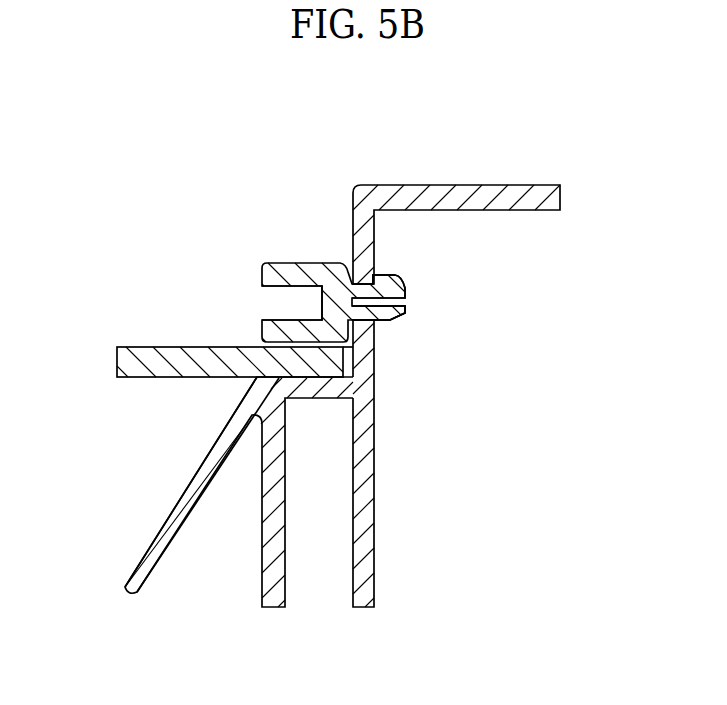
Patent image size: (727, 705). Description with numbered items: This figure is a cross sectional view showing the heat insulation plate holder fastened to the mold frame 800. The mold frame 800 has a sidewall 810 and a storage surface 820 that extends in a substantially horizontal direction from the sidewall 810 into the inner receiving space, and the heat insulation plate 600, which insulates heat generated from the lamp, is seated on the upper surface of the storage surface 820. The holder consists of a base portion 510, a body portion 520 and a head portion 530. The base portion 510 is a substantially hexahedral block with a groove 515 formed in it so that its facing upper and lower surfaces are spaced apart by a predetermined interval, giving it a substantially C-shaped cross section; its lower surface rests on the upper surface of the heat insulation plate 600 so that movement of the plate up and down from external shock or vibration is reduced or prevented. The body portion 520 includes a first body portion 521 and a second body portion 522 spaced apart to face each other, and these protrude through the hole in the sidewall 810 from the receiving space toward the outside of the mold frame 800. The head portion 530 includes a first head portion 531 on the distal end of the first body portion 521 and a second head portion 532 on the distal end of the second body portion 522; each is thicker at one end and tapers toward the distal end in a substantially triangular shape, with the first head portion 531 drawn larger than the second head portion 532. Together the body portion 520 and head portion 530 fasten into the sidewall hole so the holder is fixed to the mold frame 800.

The base portion 510 is at (288, 267).
The groove 515 is at (280, 307).
The body portion 520 is at (503, 547).
The first body portion 521 is at (358, 282).
The second body portion 522 is at (375, 337).
The head portion 530 is at (503, 594).
The first head portion 531 is at (403, 276).
The second head portion 532 is at (386, 321).
The heat insulation plate 600 is at (127, 362).
The mold frame 800 is at (562, 172).
The sidewall 810 is at (376, 360).
The storage surface 820 is at (322, 388).